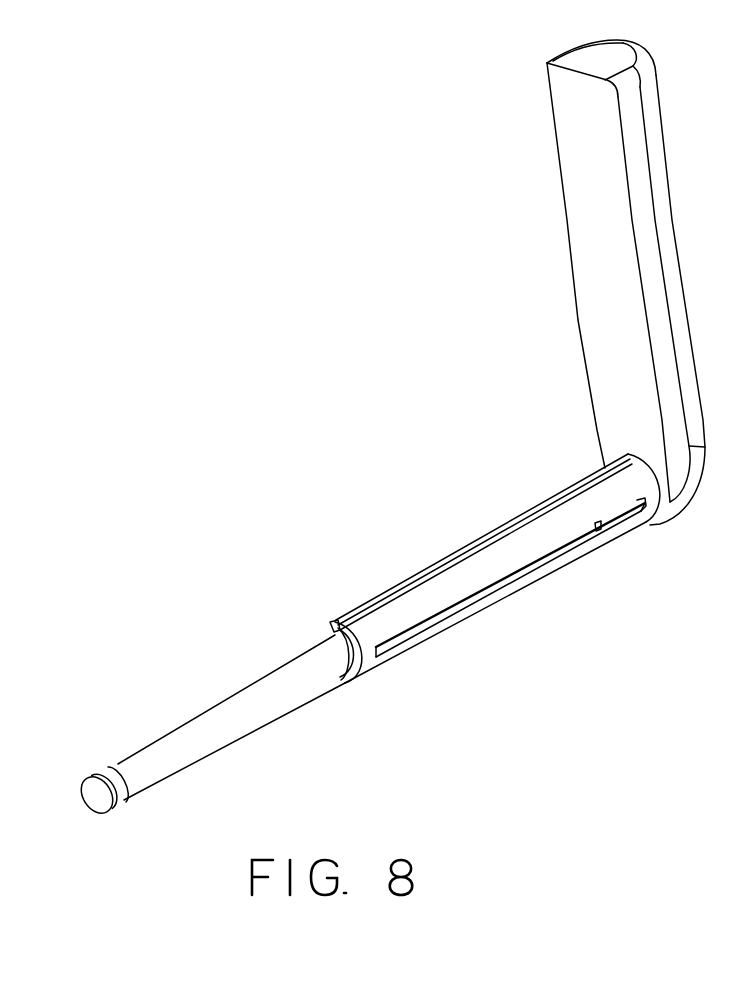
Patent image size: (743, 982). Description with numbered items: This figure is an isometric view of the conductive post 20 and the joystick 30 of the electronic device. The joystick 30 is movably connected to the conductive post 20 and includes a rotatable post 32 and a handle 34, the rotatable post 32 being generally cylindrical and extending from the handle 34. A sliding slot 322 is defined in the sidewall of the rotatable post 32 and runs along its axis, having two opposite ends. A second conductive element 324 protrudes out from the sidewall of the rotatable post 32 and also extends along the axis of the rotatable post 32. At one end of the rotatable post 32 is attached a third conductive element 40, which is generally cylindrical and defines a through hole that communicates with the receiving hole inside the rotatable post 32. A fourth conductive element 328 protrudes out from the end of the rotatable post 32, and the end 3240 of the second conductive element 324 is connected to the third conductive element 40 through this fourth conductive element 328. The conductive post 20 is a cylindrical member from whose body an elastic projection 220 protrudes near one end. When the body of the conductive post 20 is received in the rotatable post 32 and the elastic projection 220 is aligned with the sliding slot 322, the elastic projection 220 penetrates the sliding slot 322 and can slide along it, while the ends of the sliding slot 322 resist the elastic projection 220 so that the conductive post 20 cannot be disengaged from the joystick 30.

The conductive post 20 is at (172, 748).
The joystick 30 is at (504, 340).
The rotatable post 32 is at (617, 482).
The handle 34 is at (613, 320).
The third conductive element 40 is at (350, 657).
The elastic projection 220 is at (617, 518).
The sliding slot 322 is at (497, 587).
The second conductive element 324 is at (457, 557).
The fourth conductive element 328 is at (331, 628).
The end of the second conductive element 3240 is at (335, 622).